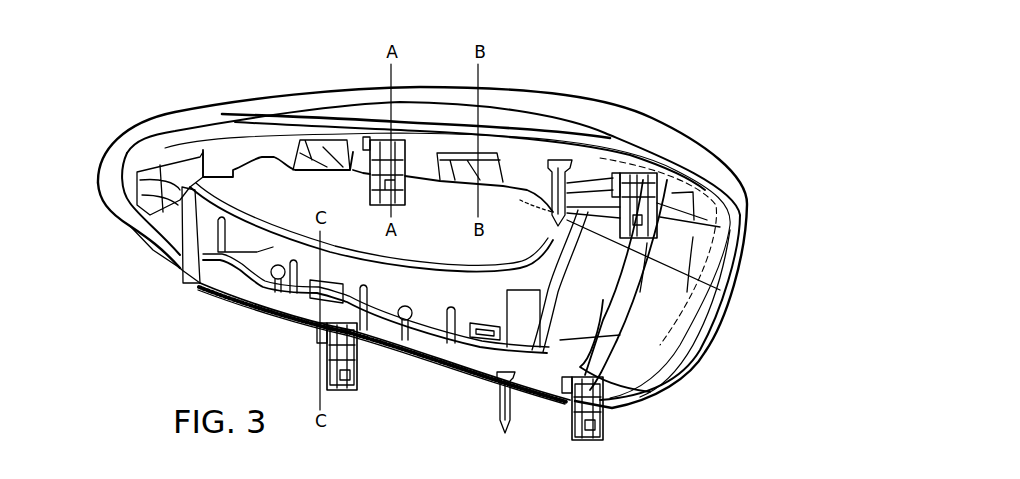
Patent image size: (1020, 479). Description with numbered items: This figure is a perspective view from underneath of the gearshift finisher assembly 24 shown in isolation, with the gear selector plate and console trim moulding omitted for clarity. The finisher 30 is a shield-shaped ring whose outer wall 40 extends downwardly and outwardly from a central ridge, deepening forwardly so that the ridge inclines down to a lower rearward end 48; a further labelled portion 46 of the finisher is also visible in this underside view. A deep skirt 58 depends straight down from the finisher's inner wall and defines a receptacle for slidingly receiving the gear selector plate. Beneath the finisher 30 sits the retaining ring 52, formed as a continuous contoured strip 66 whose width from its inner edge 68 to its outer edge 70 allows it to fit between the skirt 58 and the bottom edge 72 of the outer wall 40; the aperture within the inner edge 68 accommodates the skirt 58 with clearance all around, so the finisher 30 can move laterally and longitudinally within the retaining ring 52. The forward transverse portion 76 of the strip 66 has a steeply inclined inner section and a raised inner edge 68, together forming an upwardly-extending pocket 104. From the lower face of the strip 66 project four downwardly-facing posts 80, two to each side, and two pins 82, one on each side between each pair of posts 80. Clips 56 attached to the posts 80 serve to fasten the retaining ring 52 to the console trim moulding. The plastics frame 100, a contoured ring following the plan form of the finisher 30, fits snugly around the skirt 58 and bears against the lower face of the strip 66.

The gearshift finisher assembly 24 is at (760, 199).
The finisher 30 is at (620, 138).
The outer wall 40 is at (653, 142).
The side wall 46 is at (672, 202).
The lower rearward end 48 is at (166, 112).
The retaining ring 52 is at (242, 115).
The clip 56 is at (347, 357).
The skirt 58 is at (273, 247).
The contoured strip 66 is at (293, 123).
The inner edge 68 is at (603, 253).
The outer edge 70 is at (621, 270).
The bottom edge 72 is at (717, 313).
The forward transverse portion 76 is at (610, 313).
The post 80 is at (367, 140).
The pin 82 is at (573, 177).
The plastics frame 100 is at (197, 167).
The pocket 104 is at (663, 322).